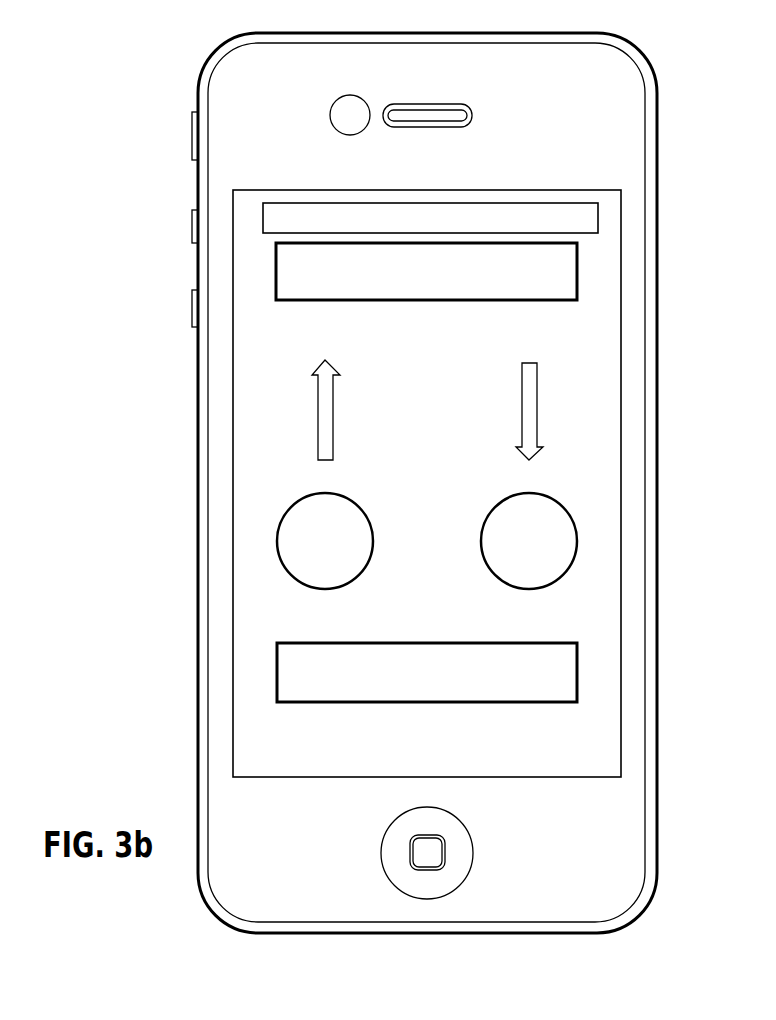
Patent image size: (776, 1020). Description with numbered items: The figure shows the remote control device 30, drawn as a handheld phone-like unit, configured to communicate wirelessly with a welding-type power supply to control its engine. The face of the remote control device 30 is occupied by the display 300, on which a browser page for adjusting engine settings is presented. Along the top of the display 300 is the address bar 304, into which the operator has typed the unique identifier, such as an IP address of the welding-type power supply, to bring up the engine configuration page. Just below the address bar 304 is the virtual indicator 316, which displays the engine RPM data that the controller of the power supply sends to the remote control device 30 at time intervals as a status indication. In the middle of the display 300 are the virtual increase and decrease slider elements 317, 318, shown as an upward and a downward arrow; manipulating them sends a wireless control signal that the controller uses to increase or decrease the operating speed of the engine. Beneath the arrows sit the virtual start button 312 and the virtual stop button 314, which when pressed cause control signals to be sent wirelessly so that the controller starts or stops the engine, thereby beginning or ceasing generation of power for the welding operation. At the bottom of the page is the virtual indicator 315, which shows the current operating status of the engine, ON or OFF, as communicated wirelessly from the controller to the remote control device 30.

The remote control device 30 is at (192, 50).
The display 300 is at (622, 247).
The address bar 304 is at (263, 219).
The virtual indicator 316 is at (277, 283).
The virtual increase slider element 317 is at (318, 419).
The virtual decrease slider element 318 is at (538, 418).
The virtual start button 312 is at (309, 497).
The virtual stop button 314 is at (549, 496).
The virtual indicator 315 is at (427, 643).